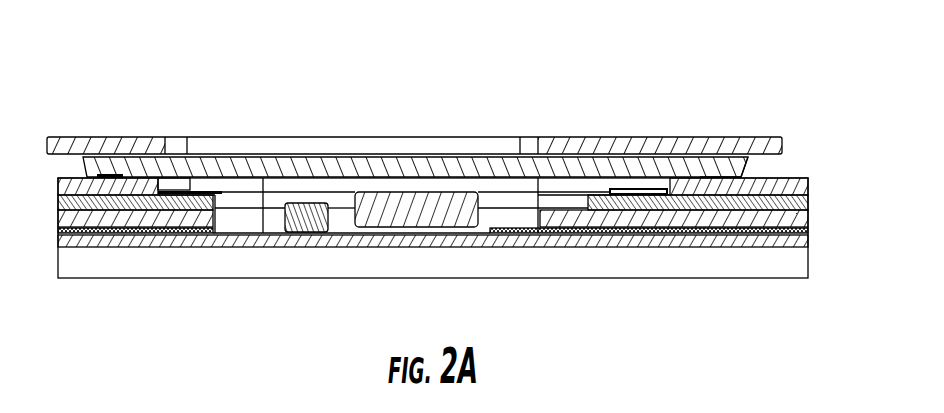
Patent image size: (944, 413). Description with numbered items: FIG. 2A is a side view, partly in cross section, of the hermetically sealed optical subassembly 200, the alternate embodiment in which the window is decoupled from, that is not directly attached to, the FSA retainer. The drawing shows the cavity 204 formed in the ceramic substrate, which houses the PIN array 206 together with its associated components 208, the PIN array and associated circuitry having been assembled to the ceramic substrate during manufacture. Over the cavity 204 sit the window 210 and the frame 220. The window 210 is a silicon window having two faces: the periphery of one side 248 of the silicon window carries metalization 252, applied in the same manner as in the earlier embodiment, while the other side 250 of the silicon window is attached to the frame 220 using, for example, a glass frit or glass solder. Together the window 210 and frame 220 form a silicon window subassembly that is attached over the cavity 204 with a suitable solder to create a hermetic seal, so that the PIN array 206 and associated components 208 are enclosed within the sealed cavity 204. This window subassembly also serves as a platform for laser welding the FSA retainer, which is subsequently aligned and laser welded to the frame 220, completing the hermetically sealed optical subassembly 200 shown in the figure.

The hermetically sealed optical subassembly 200 is at (463, 183).
The cavity 204 is at (233, 220).
The PIN array 206 is at (306, 195).
The associated components 208 is at (426, 195).
The window 210 is at (600, 158).
The frame 220 is at (697, 135).
The one side of the silicon window 248 is at (743, 179).
The other side of the silicon window 250 is at (729, 175).
The metalization 252 is at (736, 177).